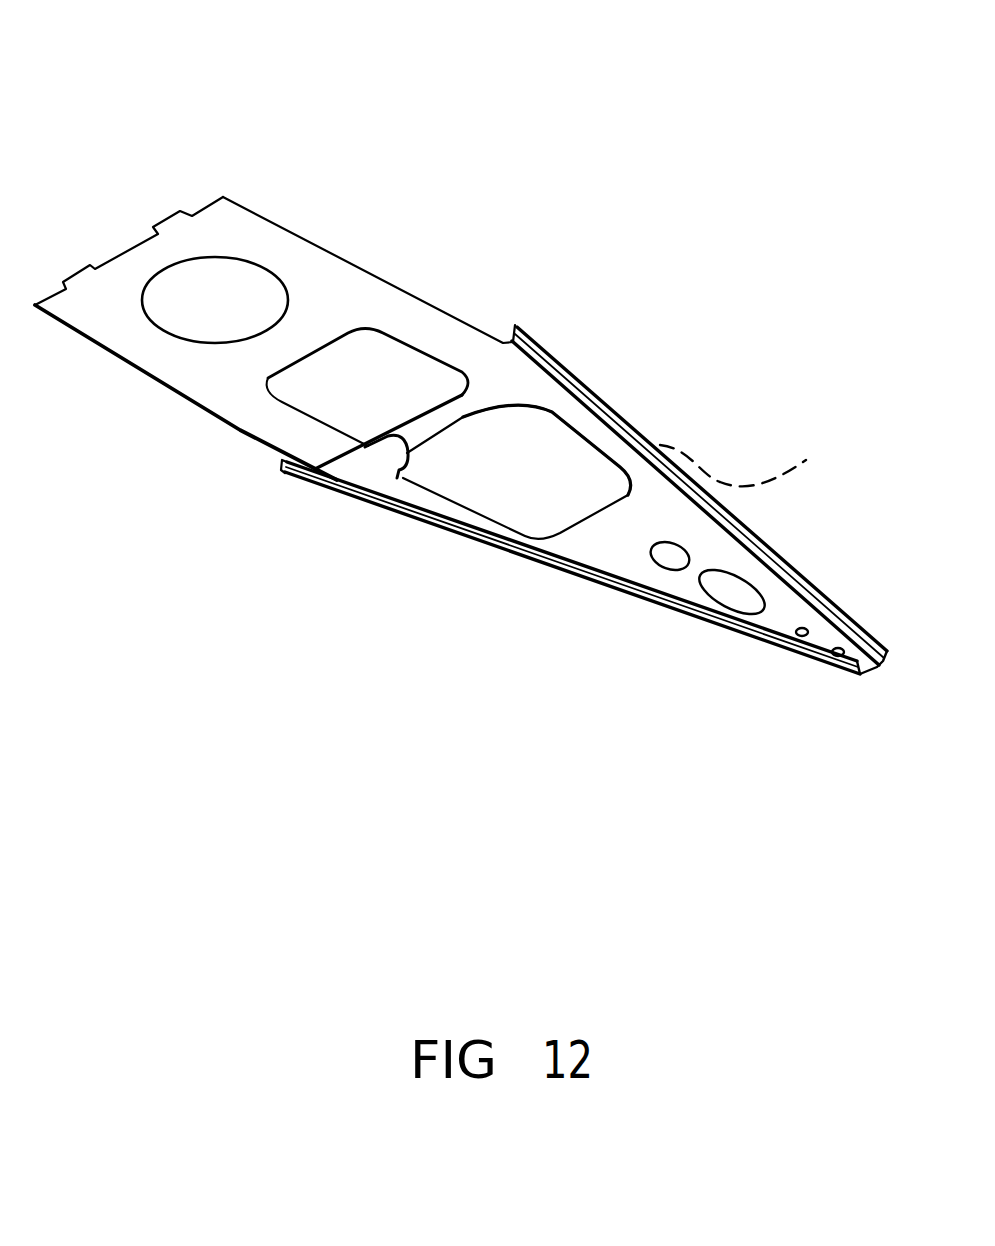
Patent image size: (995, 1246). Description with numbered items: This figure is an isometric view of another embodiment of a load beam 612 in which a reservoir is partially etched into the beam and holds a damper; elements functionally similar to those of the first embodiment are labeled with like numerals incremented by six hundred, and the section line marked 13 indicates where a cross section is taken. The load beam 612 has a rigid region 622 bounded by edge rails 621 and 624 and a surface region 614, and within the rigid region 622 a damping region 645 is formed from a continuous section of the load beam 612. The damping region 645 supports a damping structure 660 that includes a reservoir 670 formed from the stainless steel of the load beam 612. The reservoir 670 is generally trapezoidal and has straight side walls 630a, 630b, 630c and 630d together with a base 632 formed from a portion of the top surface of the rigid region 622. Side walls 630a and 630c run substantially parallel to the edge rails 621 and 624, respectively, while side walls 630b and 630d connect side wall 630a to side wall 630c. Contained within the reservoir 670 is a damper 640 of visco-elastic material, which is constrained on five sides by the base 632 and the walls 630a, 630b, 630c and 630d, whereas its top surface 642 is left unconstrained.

The top plate 614 is at (238, 210).
The load beam 612 is at (397, 287).
The edge rail 624 is at (805, 580).
The top surface 642 is at (307, 469).
The damper 640 is at (413, 487).
The side wall 630a is at (437, 510).
The side wall 630b is at (465, 428).
The side wall 630c is at (566, 420).
The side wall 630d is at (577, 527).
The damping structure 660 is at (587, 440).
The reservoir 670 is at (532, 400).
The base 632 is at (772, 459).
The damping region 645 is at (580, 510).
The rigid region 622 is at (698, 618).
The edge rail 621 is at (782, 647).
The section line 13 is at (593, 440).